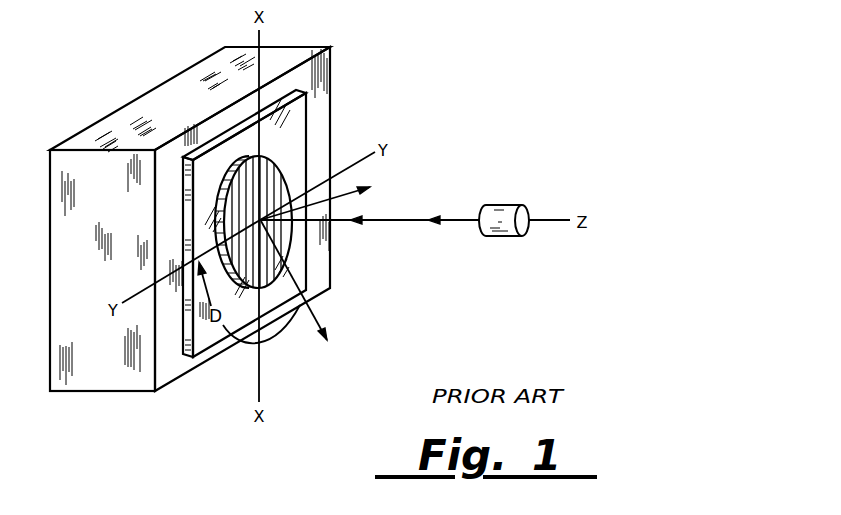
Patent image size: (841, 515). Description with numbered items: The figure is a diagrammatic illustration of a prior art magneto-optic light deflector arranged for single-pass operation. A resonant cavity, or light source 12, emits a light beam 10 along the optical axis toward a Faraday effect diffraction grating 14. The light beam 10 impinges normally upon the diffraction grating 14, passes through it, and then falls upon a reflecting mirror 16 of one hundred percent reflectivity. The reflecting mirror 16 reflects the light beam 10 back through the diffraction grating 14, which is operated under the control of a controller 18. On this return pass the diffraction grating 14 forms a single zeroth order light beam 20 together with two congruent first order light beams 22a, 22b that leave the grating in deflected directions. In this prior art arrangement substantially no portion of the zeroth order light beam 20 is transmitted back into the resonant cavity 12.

The light beam 10 is at (431, 224).
The light source 12 is at (505, 206).
The Faraday effect diffraction grating 14 is at (233, 180).
The reflecting mirror 16 is at (302, 122).
The controller 18 is at (80, 378).
The 0'th order light beam 20 is at (353, 224).
The 1'st order light beam 22a is at (372, 184).
The 1'st order light beam 22b is at (340, 333).